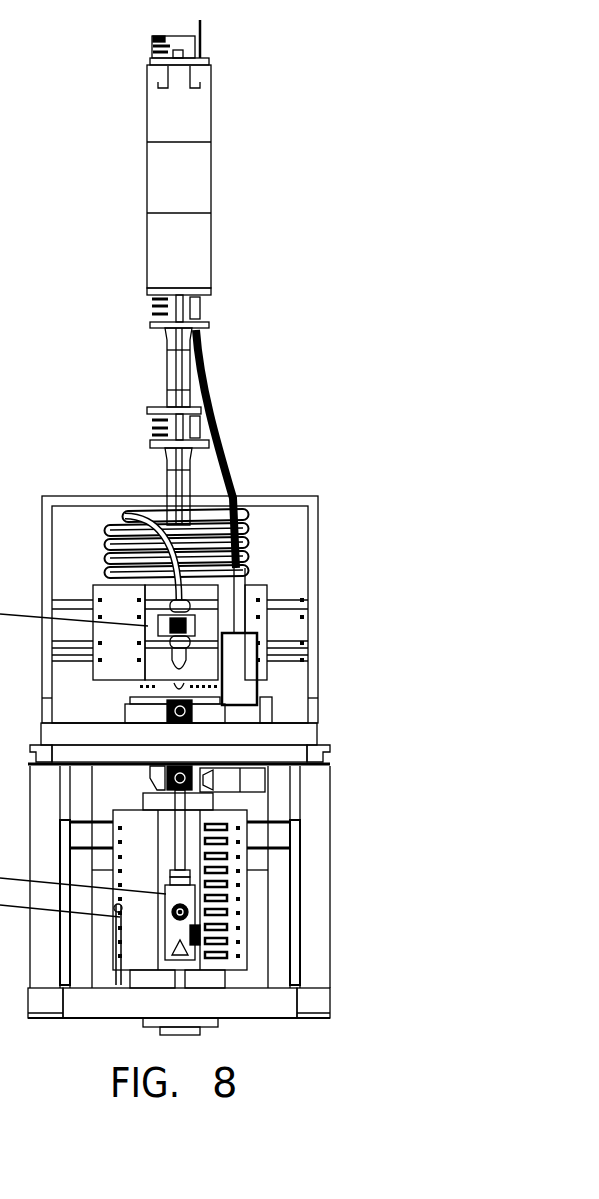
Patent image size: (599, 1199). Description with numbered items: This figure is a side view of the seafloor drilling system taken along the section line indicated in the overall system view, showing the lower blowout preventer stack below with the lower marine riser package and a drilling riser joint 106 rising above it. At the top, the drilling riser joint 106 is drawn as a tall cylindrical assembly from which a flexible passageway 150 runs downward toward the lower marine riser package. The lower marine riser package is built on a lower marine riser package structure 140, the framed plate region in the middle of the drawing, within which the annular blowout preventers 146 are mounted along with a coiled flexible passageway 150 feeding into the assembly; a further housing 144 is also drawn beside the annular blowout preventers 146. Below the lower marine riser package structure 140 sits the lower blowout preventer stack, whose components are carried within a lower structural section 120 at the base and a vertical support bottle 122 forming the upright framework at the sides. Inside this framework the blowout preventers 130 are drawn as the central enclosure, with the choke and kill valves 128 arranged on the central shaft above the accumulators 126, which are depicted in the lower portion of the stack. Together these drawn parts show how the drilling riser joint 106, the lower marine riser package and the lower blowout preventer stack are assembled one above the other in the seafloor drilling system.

The drilling riser joint 106 is at (211, 198).
The flexible passageway 150 is at (232, 463).
The annular blowout preventers 146 is at (258, 605).
The drive housing 144 is at (258, 688).
The lower marine riser package structure 140 is at (258, 742).
The blowout preventers 130 is at (252, 836).
The choke and kill valves 128 is at (247, 883).
The accumulators 126 is at (278, 905).
The vertical support bottle 122 is at (313, 943).
The lower structural section 120 is at (258, 1004).